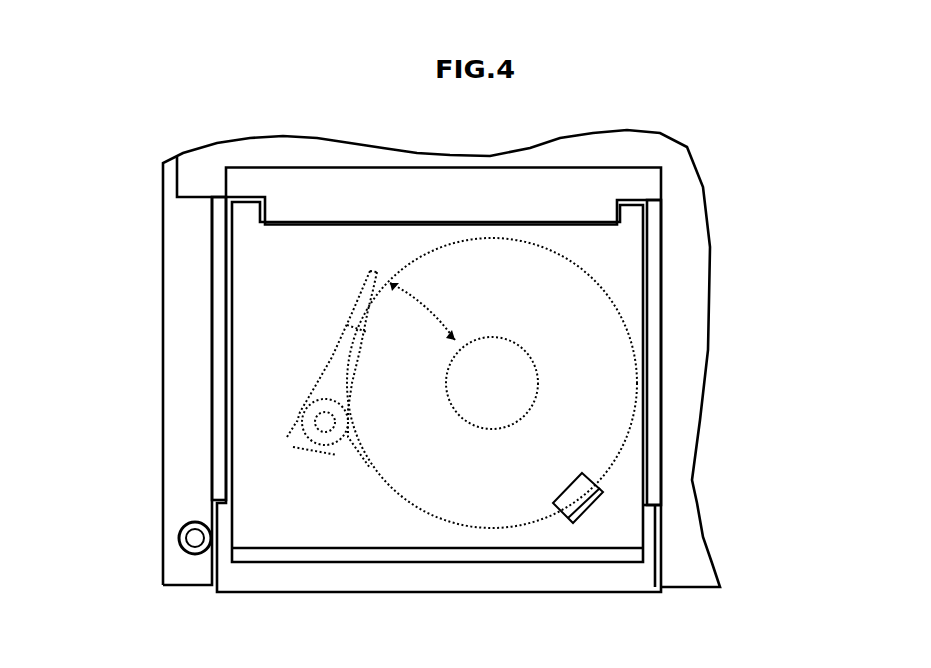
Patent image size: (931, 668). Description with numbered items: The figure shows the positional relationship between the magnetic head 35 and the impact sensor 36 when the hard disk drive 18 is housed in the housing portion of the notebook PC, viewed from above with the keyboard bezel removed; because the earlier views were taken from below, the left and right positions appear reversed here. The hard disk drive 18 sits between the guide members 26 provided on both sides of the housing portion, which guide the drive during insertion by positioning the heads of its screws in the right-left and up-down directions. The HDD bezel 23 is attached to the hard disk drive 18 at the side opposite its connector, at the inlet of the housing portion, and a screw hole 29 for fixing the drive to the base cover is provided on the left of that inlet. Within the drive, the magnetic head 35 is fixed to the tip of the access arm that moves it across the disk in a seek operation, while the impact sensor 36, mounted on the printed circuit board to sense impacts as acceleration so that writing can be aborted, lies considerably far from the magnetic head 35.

The hard disk drive 18 is at (315, 546).
The HDD bezel 23 is at (387, 592).
The guide member 26 is at (211, 372).
The screw hole 29 is at (179, 537).
The magnetic head 35 is at (370, 272).
The impact sensor 36 is at (587, 520).